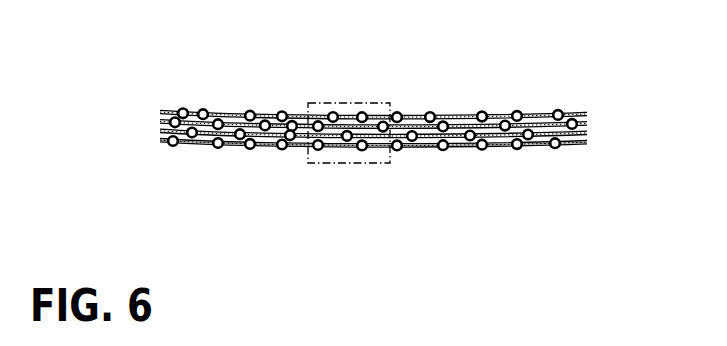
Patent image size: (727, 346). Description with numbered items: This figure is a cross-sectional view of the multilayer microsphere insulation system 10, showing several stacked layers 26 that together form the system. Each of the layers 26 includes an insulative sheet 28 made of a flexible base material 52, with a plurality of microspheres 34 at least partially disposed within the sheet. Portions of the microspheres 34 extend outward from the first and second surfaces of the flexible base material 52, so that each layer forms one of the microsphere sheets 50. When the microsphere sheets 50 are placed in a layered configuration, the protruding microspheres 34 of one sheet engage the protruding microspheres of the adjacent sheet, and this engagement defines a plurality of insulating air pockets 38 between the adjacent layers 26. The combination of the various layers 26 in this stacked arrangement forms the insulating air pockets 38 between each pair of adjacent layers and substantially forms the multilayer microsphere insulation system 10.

The multilayer microsphere insulation system 10 is at (263, 82).
The layers 26 is at (583, 117).
The insulative sheet 28 is at (262, 145).
The microspheres 34 is at (432, 110).
The insulating air pockets 38 is at (458, 135).
The microsphere sheets 50 is at (160, 133).
The flexible base material 52 is at (494, 113).